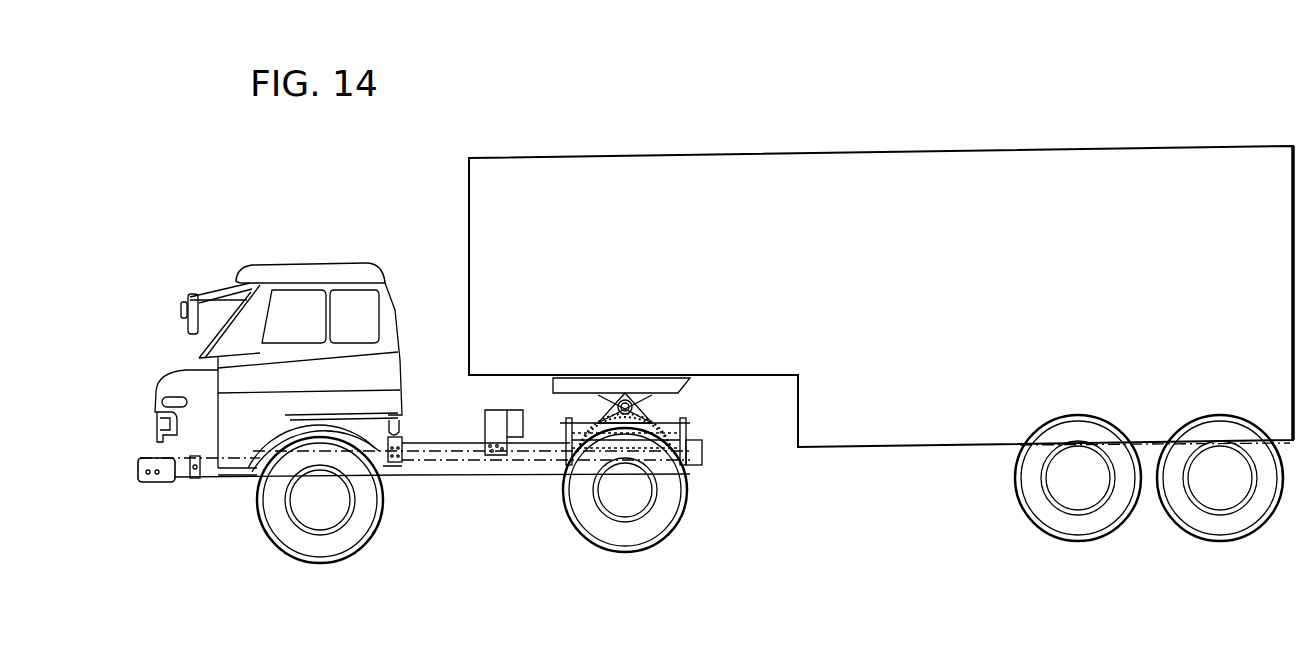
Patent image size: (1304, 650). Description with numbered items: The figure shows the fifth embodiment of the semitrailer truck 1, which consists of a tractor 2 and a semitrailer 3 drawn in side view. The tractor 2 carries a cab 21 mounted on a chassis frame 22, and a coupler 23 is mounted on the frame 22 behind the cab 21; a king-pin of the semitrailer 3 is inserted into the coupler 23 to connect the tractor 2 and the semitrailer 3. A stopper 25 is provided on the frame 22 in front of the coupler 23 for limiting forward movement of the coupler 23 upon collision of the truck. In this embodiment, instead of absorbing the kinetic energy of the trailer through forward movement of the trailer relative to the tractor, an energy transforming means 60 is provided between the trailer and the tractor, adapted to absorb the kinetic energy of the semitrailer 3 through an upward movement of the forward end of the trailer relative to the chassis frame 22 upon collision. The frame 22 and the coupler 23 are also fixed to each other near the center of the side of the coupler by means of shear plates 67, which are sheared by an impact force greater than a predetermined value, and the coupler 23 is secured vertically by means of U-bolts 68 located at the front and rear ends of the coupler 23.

The semitrailer truck 1 is at (556, 97).
The tractor 2 is at (366, 256).
The semitrailer 3 is at (624, 156).
The cab 21 is at (283, 262).
The chassis frame 22 is at (464, 478).
The coupler 23 is at (680, 408).
The stopper 25 is at (485, 421).
The energy transforming means 60 is at (690, 450).
The shear plates 67 is at (646, 448).
The U-bolts 68 is at (690, 428).